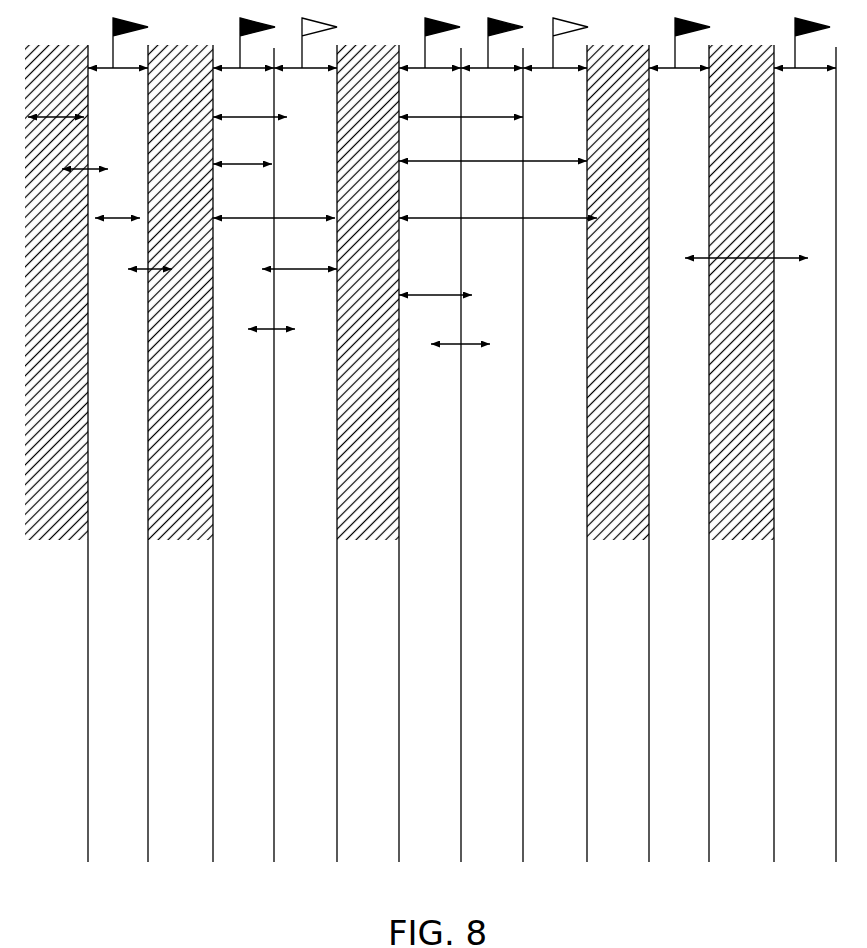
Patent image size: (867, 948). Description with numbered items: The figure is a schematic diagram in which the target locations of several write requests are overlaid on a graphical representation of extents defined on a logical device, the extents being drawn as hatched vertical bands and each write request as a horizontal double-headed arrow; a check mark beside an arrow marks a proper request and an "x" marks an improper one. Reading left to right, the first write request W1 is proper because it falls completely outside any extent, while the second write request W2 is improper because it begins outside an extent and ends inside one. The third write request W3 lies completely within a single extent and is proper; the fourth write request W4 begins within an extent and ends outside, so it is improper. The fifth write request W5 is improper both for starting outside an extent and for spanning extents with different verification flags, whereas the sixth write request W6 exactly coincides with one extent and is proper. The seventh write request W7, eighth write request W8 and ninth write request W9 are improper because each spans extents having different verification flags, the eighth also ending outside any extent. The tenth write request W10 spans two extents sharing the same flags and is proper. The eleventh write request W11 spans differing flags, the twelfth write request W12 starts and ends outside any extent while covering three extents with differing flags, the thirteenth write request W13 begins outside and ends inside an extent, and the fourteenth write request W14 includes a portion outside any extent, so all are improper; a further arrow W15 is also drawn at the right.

The first write request W1 is at (60, 114).
The second write request W2 is at (80, 172).
The third write request W3 is at (122, 222).
The fourth write request W4 is at (145, 272).
The fifth write request W5 is at (250, 116).
The sixth write request W6 is at (237, 164).
The seventh write request W7 is at (248, 218).
The eighth write request W8 is at (322, 268).
The ninth write request W9 is at (268, 328).
The tenth write request W10 is at (478, 117).
The eleventh write request W11 is at (488, 161).
The twelfth write request W12 is at (433, 218).
The thirteenth write request W13 is at (440, 295).
The fourteenth write request W14 is at (466, 344).
The width W15 is at (700, 258).